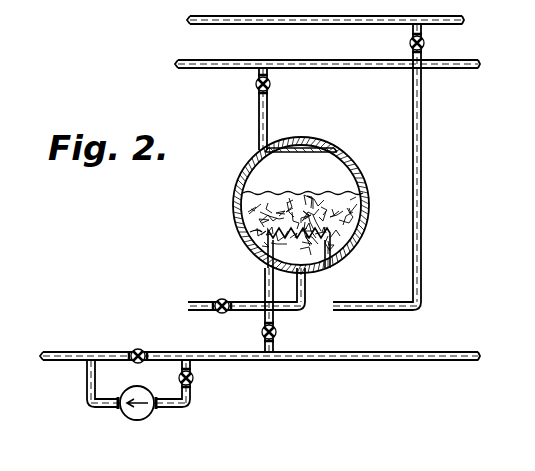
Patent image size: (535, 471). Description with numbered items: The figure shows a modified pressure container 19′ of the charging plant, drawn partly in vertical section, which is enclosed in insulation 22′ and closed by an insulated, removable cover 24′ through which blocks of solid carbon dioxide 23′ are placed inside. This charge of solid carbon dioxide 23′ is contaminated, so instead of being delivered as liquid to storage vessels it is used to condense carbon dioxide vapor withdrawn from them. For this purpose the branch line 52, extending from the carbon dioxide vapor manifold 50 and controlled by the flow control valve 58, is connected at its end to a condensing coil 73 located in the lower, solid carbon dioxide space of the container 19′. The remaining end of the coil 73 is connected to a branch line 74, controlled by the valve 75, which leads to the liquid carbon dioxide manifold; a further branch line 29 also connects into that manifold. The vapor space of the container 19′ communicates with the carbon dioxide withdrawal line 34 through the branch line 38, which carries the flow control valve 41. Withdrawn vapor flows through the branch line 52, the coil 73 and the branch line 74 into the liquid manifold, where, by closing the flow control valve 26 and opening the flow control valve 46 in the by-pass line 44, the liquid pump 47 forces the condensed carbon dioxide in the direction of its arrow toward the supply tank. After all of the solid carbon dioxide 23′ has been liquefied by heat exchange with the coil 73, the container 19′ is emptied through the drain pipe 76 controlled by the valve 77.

The carbon dioxide vapor manifold 50 is at (302, 25).
The carbon dioxide withdrawal line 34 is at (373, 60).
The flow control valve 58 is at (426, 43).
The branch line 38 is at (258, 114).
The flow control valve 41 is at (271, 86).
The branch line 52 is at (423, 220).
The insulation 22′ is at (236, 187).
The insulated removable cover 24′ is at (309, 147).
The solid carbon dioxide 23′ is at (290, 196).
The pressure container 19′ is at (246, 230).
The condensing coil 73 is at (299, 248).
The branch line 74 is at (264, 292).
The valve 75 is at (261, 332).
The drain pipe 76 is at (302, 314).
The valve 77 is at (220, 298).
The branch line 29 is at (406, 361).
The flow control valve 26 is at (137, 348).
The by-pass line 44 is at (191, 400).
The liquid pump 47 is at (138, 421).
The flow control valve 46 is at (195, 378).